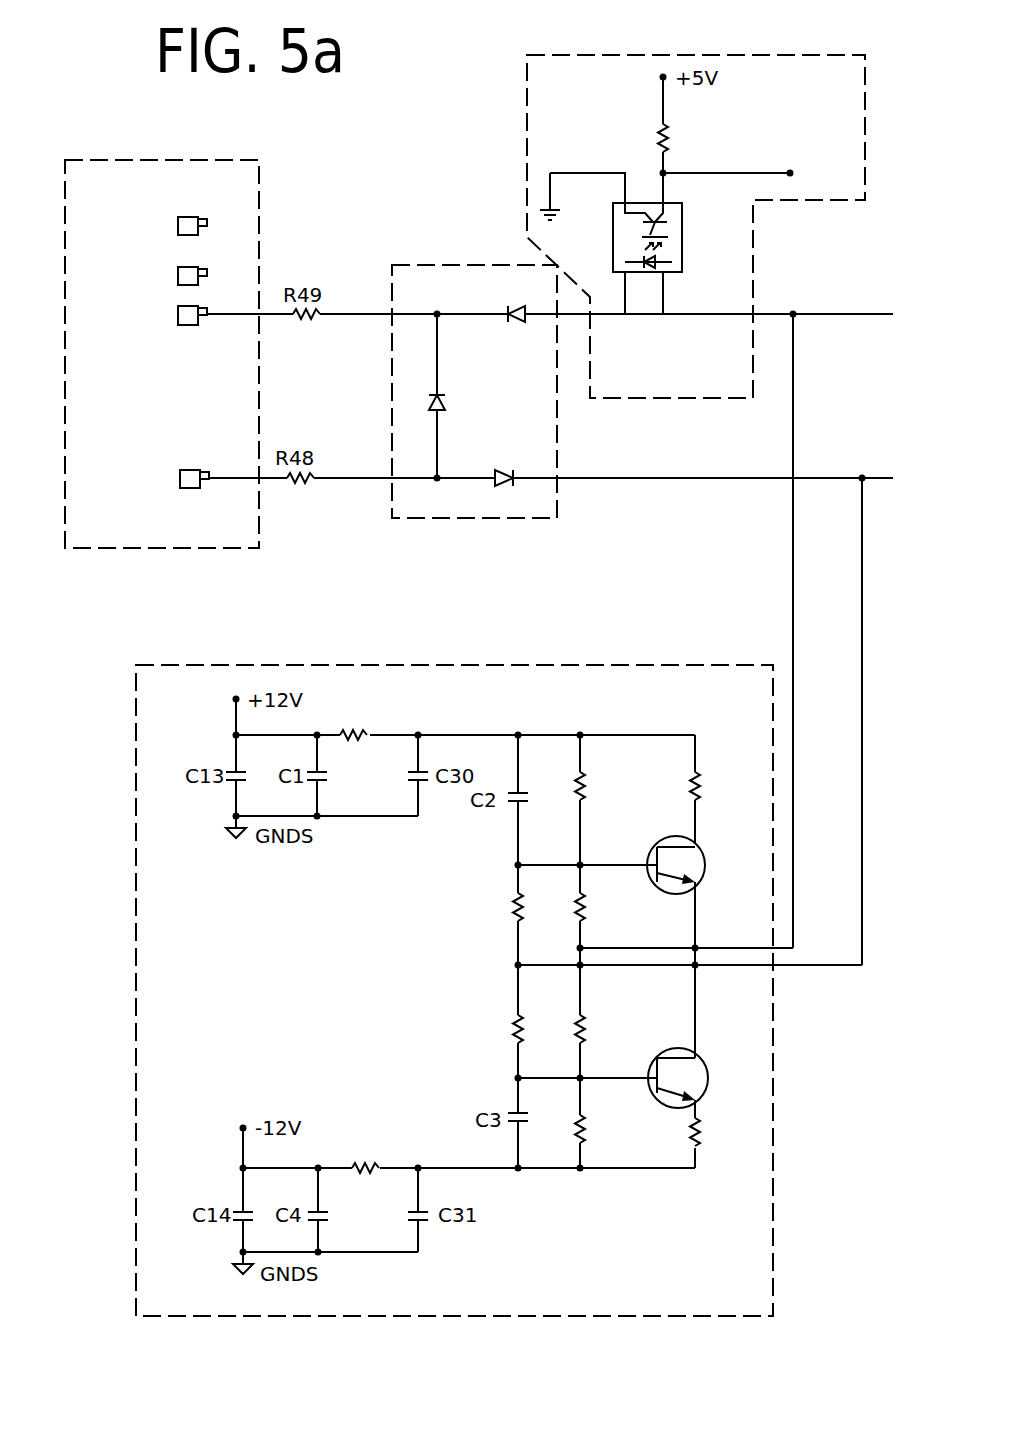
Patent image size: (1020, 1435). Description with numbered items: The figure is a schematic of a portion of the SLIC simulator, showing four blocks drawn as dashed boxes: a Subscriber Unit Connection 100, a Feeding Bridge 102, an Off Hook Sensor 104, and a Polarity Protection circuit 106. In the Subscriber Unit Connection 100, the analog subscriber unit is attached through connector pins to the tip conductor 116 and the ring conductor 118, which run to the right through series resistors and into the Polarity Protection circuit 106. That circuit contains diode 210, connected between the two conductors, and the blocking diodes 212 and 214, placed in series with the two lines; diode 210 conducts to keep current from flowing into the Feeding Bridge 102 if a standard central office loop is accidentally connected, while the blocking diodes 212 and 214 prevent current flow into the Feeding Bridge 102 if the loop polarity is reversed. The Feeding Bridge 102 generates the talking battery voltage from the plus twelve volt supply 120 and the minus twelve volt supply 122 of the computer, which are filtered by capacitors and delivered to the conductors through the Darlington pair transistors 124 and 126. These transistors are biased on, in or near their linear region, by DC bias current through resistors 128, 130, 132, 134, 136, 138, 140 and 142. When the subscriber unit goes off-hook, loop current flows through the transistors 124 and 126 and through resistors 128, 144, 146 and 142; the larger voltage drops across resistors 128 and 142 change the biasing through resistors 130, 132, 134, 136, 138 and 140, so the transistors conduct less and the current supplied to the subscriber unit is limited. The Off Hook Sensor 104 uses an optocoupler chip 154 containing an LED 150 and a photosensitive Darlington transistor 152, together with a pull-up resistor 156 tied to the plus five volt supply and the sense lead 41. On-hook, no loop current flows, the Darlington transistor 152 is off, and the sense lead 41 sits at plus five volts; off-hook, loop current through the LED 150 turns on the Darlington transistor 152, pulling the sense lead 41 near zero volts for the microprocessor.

The Subscriber Unit Connection 100 is at (185, 160).
The Feeding Bridge 102 is at (137, 961).
The Off Hook Sensor 104 is at (866, 120).
The Polarity Protection circuit 106 is at (558, 503).
The tip conductor 116 is at (193, 490).
The ring conductor 118 is at (185, 328).
The +12 volt supply 120 is at (233, 702).
The -12 volt supply 122 is at (240, 1128).
The Darlington pair transistor 124 is at (705, 865).
The Darlington pair transistor 126 is at (706, 1066).
The resistor 128 is at (365, 705).
The resistor 130 is at (603, 772).
The resistor 132 is at (600, 930).
The resistor 134 is at (455, 906).
The resistor 136 is at (610, 1012).
The resistor 138 is at (487, 1045).
The resistor 140 is at (578, 1123).
The resistor 142 is at (395, 1148).
The resistor 144 is at (708, 775).
The resistor 146 is at (725, 1152).
The LED 150 is at (665, 262).
The photosensitive Darlington transistor 152 is at (668, 222).
The single chip 154 is at (606, 228).
The pull-up resistor 156 is at (670, 135).
The sense lead 41 is at (715, 172).
The diode 210 is at (430, 397).
The blocking diode 212 is at (497, 483).
The blocking diode 214 is at (517, 307).